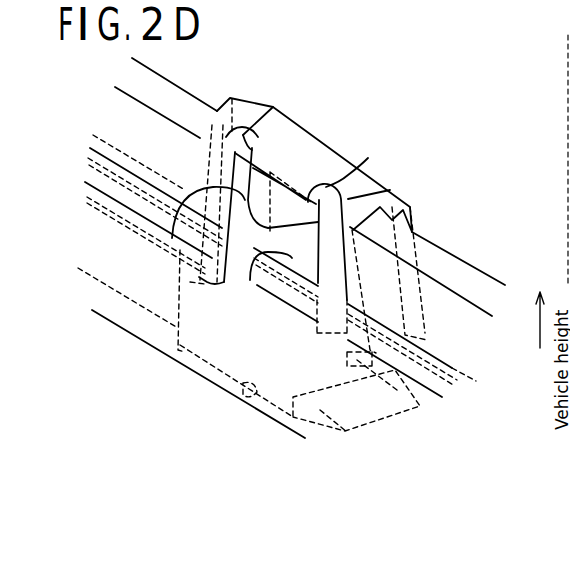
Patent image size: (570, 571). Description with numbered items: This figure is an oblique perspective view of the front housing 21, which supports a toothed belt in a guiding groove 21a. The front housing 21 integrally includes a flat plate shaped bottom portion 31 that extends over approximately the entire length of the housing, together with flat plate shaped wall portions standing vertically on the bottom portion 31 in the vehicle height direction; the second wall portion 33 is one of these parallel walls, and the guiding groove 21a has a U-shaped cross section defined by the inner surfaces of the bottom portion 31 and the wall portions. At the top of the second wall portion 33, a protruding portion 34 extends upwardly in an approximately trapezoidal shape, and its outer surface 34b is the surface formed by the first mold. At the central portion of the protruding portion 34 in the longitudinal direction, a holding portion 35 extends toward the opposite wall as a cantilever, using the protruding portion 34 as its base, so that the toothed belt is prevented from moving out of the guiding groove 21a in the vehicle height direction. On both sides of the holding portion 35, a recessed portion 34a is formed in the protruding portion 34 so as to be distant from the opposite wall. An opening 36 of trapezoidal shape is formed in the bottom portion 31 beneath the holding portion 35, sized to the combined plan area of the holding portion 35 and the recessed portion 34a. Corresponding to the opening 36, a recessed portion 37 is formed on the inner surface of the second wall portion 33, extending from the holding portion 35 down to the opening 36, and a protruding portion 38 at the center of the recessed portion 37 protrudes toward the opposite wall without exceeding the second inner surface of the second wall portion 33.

The guiding groove 21a is at (463, 208).
The front housing 21 is at (303, 201).
The bottom portion 31 is at (180, 408).
The second wall portion 33 is at (472, 270).
The protruding portion 34 is at (331, 152).
The recessed portion 34a is at (250, 138).
The outer surface 34b is at (298, 137).
The holding portion 35 is at (173, 236).
The opening 36 is at (243, 397).
The recessed portion 37 is at (392, 186).
The protruding portion 38 is at (251, 281).